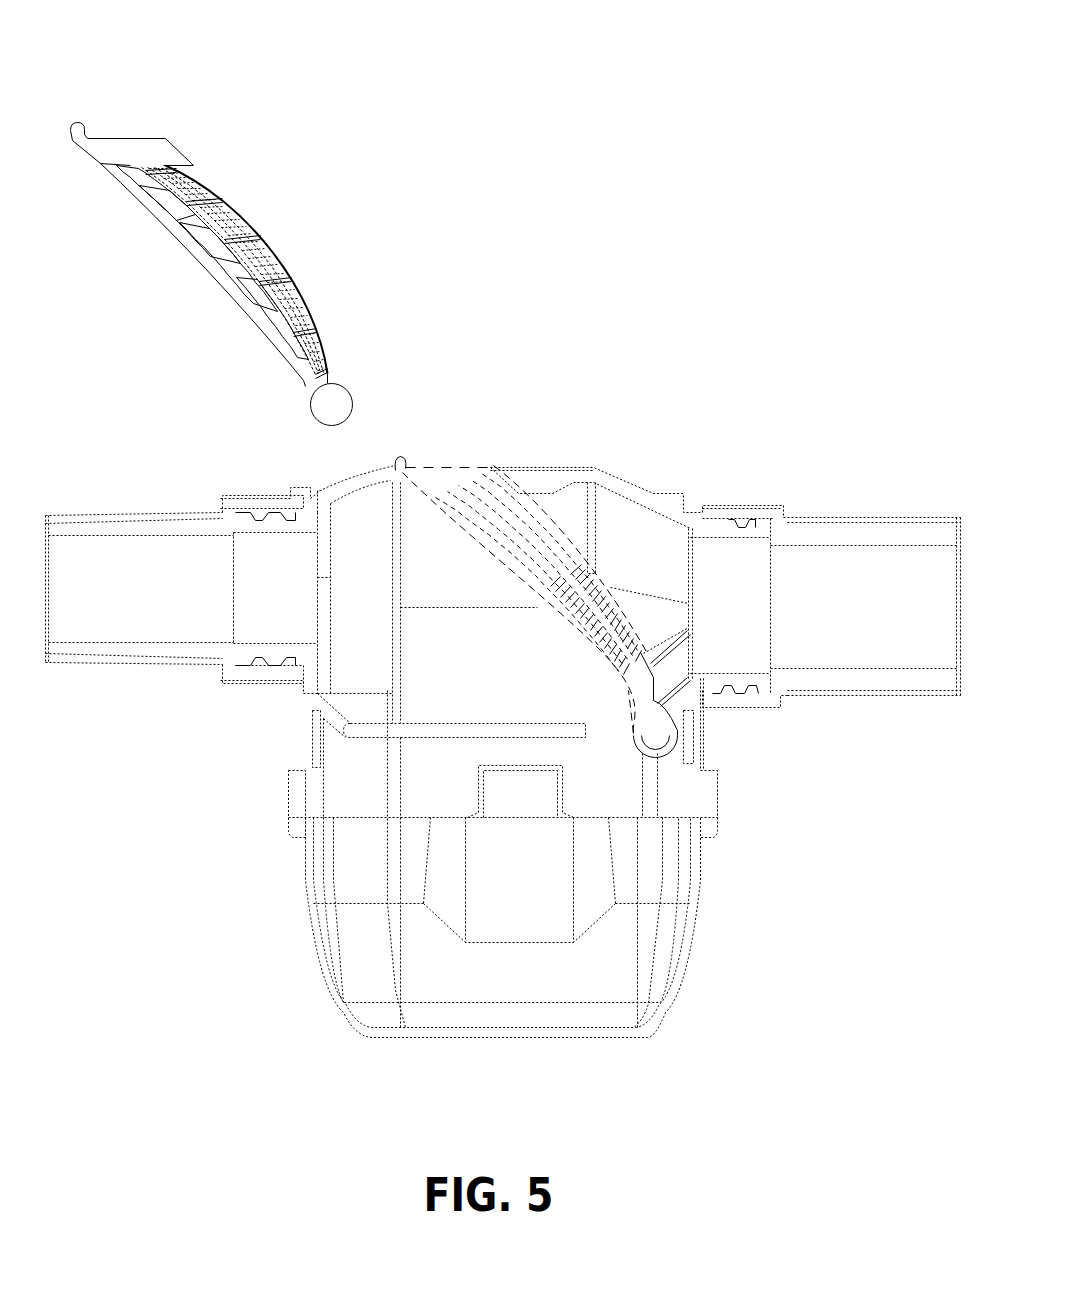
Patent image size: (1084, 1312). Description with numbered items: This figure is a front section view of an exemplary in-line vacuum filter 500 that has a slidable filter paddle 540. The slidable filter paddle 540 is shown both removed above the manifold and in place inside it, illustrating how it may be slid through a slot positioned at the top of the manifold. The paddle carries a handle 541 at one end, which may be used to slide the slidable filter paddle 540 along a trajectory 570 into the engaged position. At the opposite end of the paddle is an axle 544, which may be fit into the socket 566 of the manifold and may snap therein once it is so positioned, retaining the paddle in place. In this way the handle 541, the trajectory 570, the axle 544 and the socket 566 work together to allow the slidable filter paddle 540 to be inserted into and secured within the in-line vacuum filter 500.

The in-line vacuum filter 500 is at (90, 82).
The slidable filter paddle 540 is at (324, 346).
The handle 541 is at (78, 128).
The axle 544 is at (670, 737).
The socket 566 is at (655, 757).
The trajectory 570 is at (372, 392).